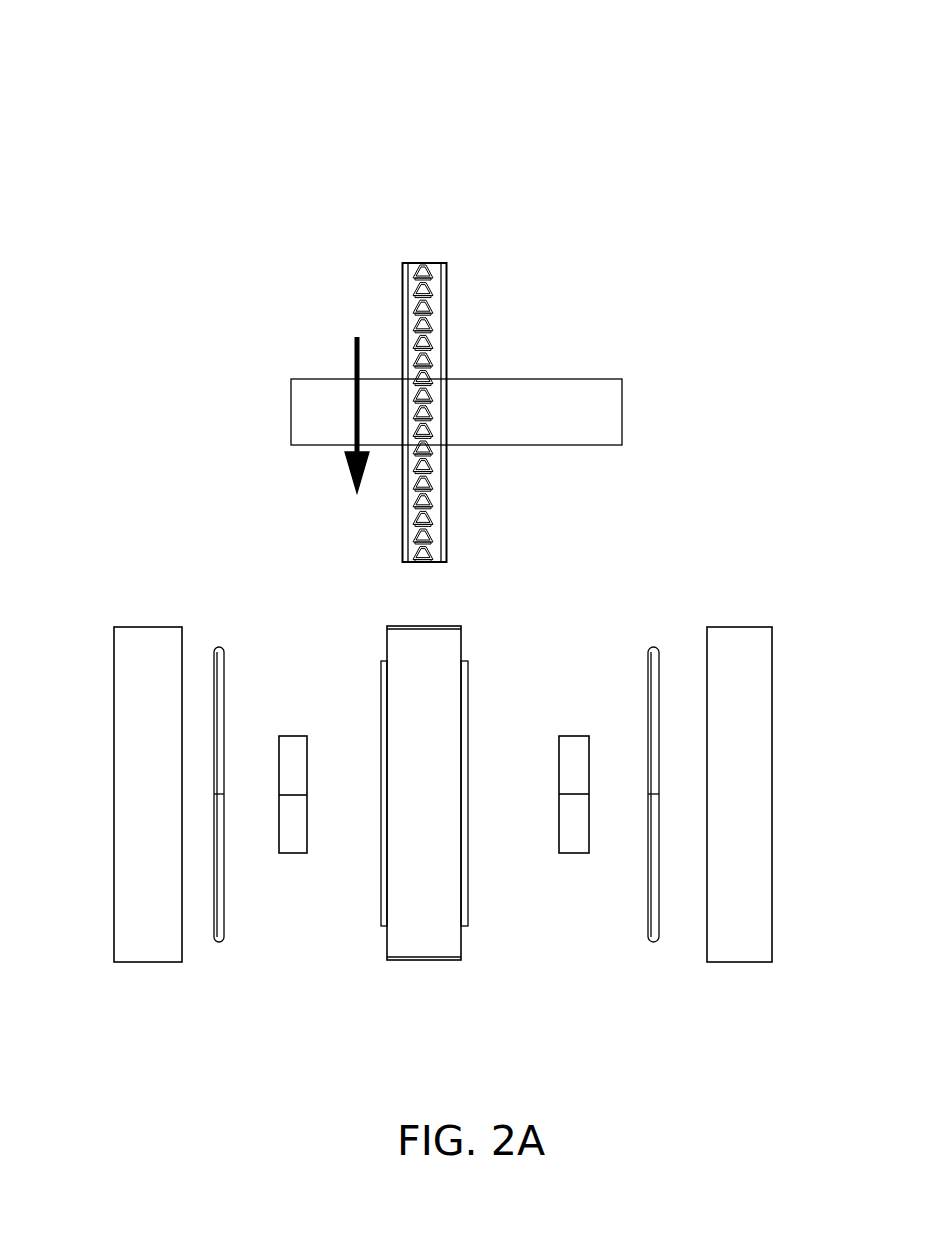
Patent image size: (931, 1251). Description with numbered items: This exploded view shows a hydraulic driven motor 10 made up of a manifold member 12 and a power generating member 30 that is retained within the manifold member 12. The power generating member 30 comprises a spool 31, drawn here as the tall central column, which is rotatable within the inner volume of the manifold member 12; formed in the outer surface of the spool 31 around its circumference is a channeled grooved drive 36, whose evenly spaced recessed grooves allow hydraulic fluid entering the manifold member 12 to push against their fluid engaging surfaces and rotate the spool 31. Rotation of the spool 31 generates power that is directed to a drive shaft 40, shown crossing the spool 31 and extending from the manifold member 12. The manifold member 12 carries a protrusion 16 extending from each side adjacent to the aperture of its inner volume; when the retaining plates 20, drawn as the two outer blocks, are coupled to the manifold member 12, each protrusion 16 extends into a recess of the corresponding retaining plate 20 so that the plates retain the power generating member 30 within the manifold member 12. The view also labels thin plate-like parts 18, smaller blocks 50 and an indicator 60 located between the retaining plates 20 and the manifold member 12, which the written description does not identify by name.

The hydraulic driven motor 10 is at (152, 82).
The manifold member 12 is at (432, 942).
The protrusion 16 is at (383, 678).
The thin plate 18 is at (219, 882).
The retaining plate 20 is at (155, 652).
The power generating member 30 is at (467, 165).
The spool 31 is at (448, 289).
The channeled grooved drive 36 is at (420, 225).
The drive shaft 40 is at (602, 415).
The block 50 is at (293, 826).
The direction of movement 60 is at (352, 362).